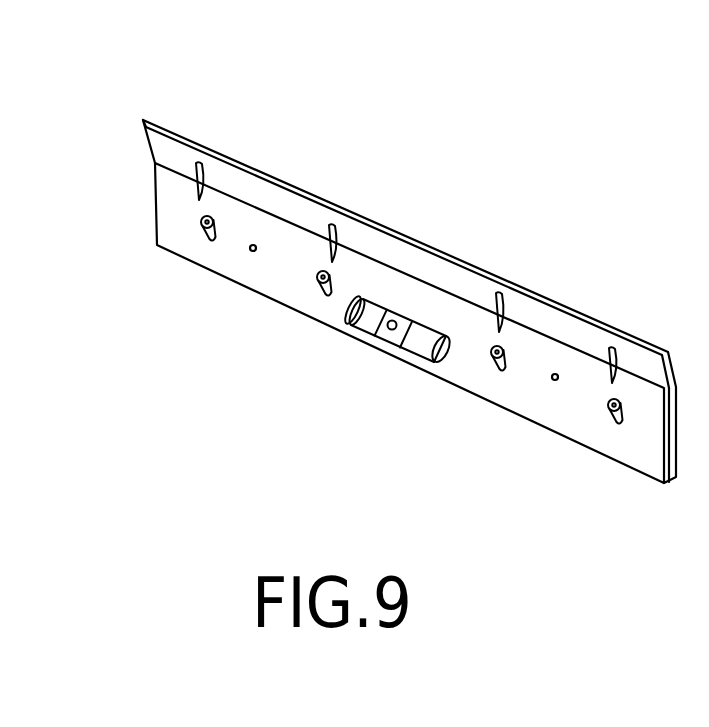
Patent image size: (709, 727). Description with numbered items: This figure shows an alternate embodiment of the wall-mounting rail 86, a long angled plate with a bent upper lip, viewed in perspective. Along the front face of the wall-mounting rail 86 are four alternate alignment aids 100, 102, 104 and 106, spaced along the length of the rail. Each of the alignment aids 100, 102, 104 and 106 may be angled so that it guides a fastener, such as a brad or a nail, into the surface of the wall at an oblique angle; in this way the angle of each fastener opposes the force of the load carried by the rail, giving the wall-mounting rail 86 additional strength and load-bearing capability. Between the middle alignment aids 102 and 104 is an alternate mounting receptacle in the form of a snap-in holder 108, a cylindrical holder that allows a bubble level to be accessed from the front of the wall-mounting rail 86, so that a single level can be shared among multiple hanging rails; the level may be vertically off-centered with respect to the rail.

The wall-mounting rail 86 is at (400, 203).
The alignment aid 100 is at (200, 223).
The alignment aid 102 is at (317, 279).
The alignment aid 104 is at (491, 360).
The alignment aid 106 is at (608, 411).
The snap-in holder 108 is at (437, 360).